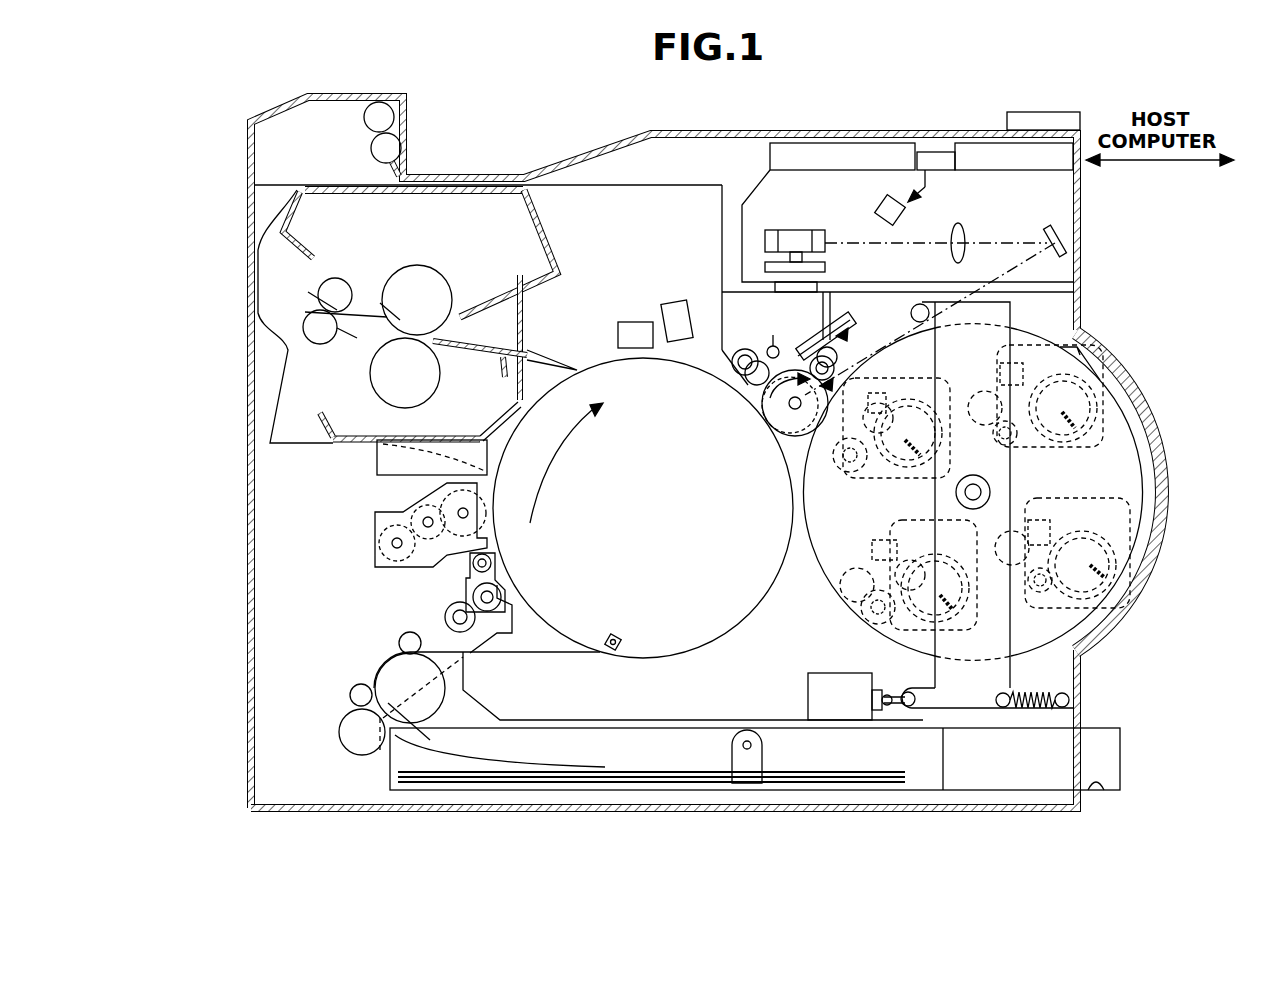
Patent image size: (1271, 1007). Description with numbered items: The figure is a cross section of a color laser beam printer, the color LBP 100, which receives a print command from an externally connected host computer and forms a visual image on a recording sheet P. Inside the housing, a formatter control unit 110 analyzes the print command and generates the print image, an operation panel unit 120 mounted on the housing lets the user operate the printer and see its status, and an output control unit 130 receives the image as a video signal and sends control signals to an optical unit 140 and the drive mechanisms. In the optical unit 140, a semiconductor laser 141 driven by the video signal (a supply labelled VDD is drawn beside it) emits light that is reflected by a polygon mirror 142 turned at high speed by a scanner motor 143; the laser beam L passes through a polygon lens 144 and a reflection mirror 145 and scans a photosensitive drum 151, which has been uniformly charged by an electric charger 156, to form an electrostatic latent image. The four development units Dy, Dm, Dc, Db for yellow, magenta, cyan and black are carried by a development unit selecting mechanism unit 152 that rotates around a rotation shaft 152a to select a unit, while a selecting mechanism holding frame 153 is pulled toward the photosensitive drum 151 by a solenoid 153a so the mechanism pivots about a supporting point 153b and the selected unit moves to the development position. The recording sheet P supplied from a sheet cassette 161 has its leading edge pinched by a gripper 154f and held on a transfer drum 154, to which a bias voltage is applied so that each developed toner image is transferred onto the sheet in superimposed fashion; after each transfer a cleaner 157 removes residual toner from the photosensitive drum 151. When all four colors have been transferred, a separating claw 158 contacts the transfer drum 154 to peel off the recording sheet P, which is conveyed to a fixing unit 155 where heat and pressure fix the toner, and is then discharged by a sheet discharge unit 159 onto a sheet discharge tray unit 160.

The color LBP 100 is at (664, 816).
The formatter control unit 110 is at (978, 155).
The operation panel unit 120 is at (1043, 118).
The output control unit 130 is at (810, 152).
The optical unit 140 is at (762, 182).
The semiconductor laser 141 is at (893, 197).
The polygon mirror 142 is at (797, 228).
The scanner motor 143 is at (765, 268).
The polygon lens 144 is at (965, 262).
The reflection mirror 145 is at (1063, 237).
The photosensitive drum 151 is at (767, 428).
The development unit selecting mechanism unit 152 is at (1117, 458).
The rotation shaft 152a is at (988, 485).
The selecting mechanism holding frame 153 is at (980, 680).
The solenoid 153a is at (840, 682).
The supporting point 153b is at (918, 304).
The transfer drum 154 is at (750, 590).
The gripper 154f is at (616, 636).
The fixing unit 155 is at (313, 383).
The electric charger 156 is at (845, 332).
The cleaner 157 is at (770, 345).
The separating claw 158 is at (540, 356).
The sheet discharge unit 159 is at (400, 130).
The sheet discharge tray unit 160 is at (492, 172).
The sheet cassette 161 is at (1103, 757).
The recording sheet P is at (378, 748).
The laser beam L is at (1010, 243).
The power supply VDD is at (925, 187).
The development unit for yellow Dy is at (920, 385).
The development unit for cyan Dc is at (1100, 357).
The development unit for magenta Dm is at (1103, 557).
The development unit for black Db is at (880, 538).